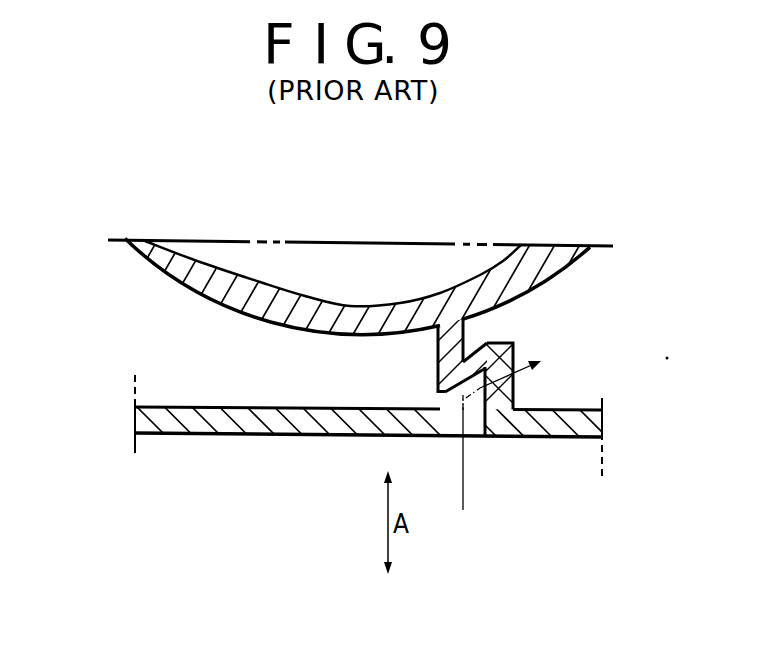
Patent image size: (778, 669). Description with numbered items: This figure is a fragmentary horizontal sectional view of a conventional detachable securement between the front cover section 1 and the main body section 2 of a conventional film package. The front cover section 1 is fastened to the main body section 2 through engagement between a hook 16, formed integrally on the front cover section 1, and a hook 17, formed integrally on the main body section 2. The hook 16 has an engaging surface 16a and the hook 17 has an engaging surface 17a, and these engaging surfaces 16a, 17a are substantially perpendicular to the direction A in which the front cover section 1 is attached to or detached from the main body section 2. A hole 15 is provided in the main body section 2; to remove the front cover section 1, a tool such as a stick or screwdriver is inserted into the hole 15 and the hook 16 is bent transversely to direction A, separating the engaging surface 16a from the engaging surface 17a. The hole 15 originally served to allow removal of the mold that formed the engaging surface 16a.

The front cover section 1 is at (258, 427).
The main body section 2 is at (428, 297).
The hole 15 is at (478, 427).
The hook 16 is at (514, 347).
The engaging surface 16a is at (500, 343).
The hook 17 is at (437, 356).
The engaging surface 17a is at (445, 392).